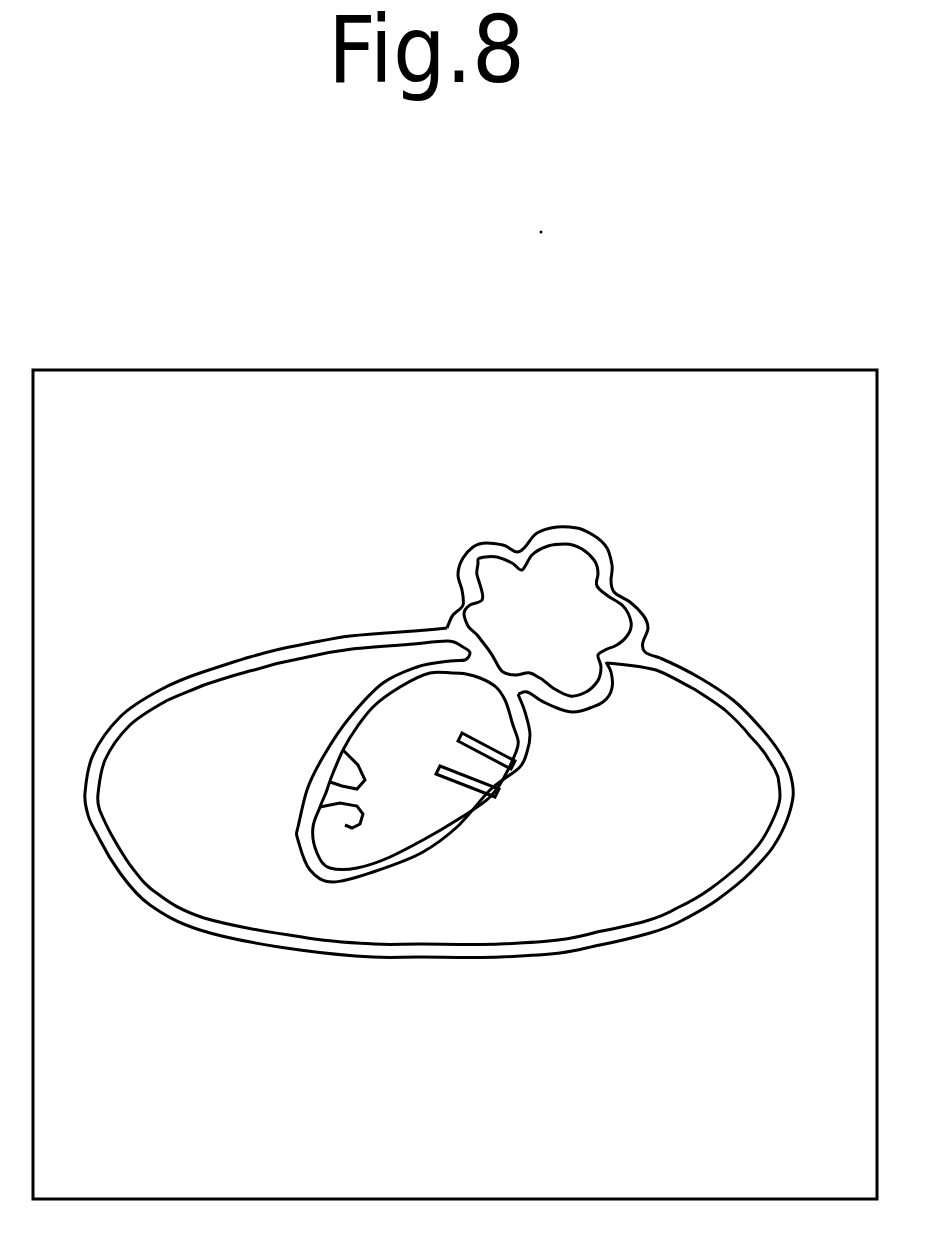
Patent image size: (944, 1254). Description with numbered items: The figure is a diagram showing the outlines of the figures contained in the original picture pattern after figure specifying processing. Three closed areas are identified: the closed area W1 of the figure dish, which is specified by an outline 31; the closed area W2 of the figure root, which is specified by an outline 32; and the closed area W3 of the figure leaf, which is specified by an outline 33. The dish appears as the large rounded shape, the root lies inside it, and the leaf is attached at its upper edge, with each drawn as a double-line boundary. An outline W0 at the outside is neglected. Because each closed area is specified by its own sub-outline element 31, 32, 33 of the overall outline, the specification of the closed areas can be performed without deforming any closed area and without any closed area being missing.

The outline at the outside W0 is at (462, 766).
The closed area of figure dish W1 is at (462, 833).
The closed area of figure root W2 is at (432, 861).
The closed area of figure leaf W3 is at (579, 577).
The outline 31 is at (622, 922).
The outline 32 is at (416, 840).
The outline 33 is at (568, 548).